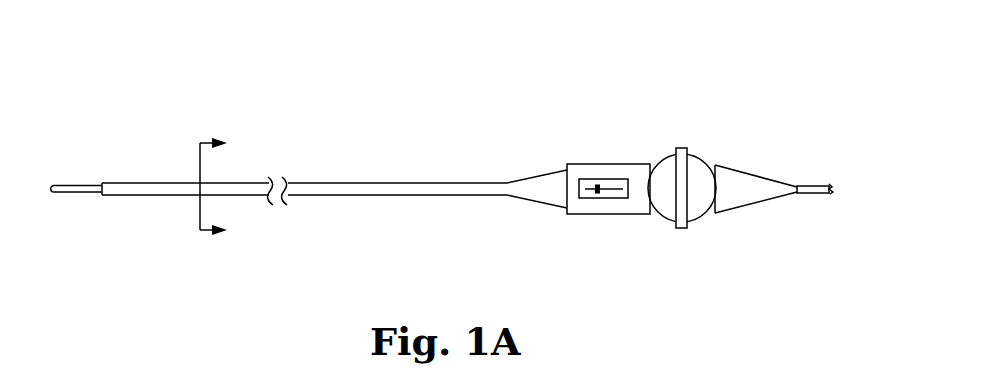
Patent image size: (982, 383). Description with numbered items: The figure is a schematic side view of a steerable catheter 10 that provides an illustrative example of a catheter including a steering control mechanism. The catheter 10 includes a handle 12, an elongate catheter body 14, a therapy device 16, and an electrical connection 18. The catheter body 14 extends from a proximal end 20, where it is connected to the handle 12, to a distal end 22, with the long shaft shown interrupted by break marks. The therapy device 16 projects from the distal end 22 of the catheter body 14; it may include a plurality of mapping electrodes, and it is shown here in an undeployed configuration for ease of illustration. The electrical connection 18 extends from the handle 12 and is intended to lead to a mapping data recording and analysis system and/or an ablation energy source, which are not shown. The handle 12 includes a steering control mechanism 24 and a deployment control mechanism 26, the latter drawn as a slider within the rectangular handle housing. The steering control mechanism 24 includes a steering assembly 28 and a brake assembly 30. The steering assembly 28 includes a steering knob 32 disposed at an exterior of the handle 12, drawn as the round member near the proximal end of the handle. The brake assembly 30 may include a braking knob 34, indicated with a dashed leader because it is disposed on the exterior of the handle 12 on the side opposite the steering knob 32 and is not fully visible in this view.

The catheter 10 is at (571, 52).
The handle 12 is at (589, 150).
The elongate catheter body 14 is at (396, 168).
The therapy device 16 is at (72, 184).
The electrical connection 18 is at (822, 184).
The proximal end 20 is at (507, 182).
The distal end 22 is at (112, 182).
The steering control mechanism 24 is at (698, 244).
The deployment control mechanism 26 is at (544, 196).
The steering assembly 28 is at (666, 244).
The brake assembly 30 is at (666, 142).
The steering knob 32 is at (704, 221).
The braking knob 34 is at (706, 158).